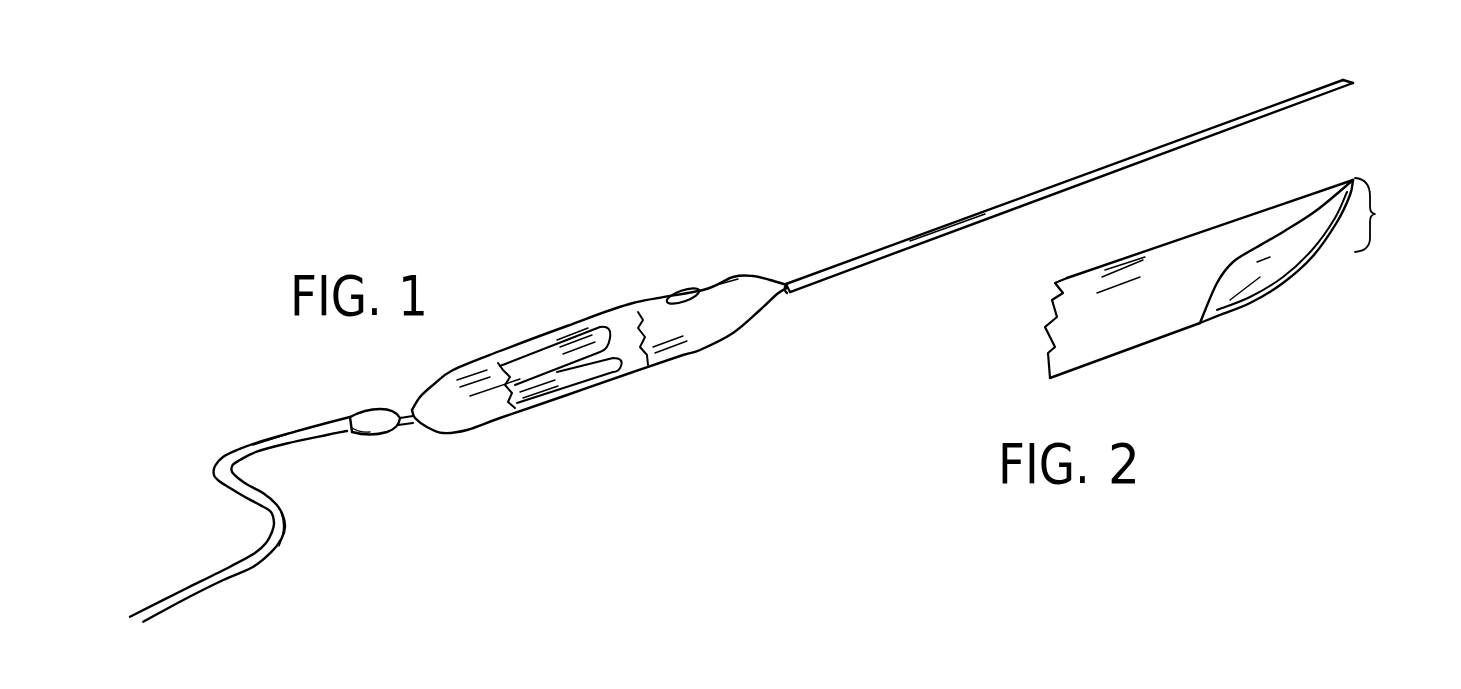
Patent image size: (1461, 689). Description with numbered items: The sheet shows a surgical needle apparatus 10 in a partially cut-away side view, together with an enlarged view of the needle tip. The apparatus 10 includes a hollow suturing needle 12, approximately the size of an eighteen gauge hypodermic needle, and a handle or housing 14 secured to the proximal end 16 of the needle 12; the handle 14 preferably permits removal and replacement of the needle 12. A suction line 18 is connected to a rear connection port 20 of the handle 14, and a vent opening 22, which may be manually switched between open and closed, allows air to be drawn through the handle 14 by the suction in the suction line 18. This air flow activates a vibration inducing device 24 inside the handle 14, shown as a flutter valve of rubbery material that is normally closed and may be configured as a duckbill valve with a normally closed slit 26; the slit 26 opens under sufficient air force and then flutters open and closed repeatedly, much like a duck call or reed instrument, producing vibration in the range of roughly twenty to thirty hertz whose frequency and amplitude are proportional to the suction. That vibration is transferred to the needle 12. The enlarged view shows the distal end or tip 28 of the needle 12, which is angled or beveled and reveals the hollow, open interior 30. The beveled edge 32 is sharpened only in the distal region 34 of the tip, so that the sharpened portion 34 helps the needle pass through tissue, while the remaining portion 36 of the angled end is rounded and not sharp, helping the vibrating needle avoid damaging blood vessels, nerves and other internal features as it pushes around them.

In FIG. 1, the surgical needle apparatus 10 is at (781, 237).
In FIG. 1, the suturing needle 12 is at (968, 218).
In FIG. 1, the handle or housing 14 is at (700, 350).
In FIG. 1, the proximal end 16 is at (797, 288).
In FIG. 1, the suction line 18 is at (323, 422).
In FIG. 1, the rear connection port 20 is at (404, 425).
In FIG. 1, the vent opening 22 is at (690, 290).
In FIG. 1, the vibration inducing device 24 is at (597, 372).
In FIG. 1, the normally closed slit 26 is at (560, 372).
In FIG. 1, the distal end or tip 28 is at (1323, 78).
In FIG. 2, the distal end or tip 28 is at (1315, 177).
In FIG. 2, the hollow open interior 30 is at (1258, 263).
In FIG. 2, the beveled edge 32 is at (1258, 312).
In FIG. 2, the distal region 34 is at (1385, 215).
In FIG. 2, the remaining portion 36 is at (1297, 265).